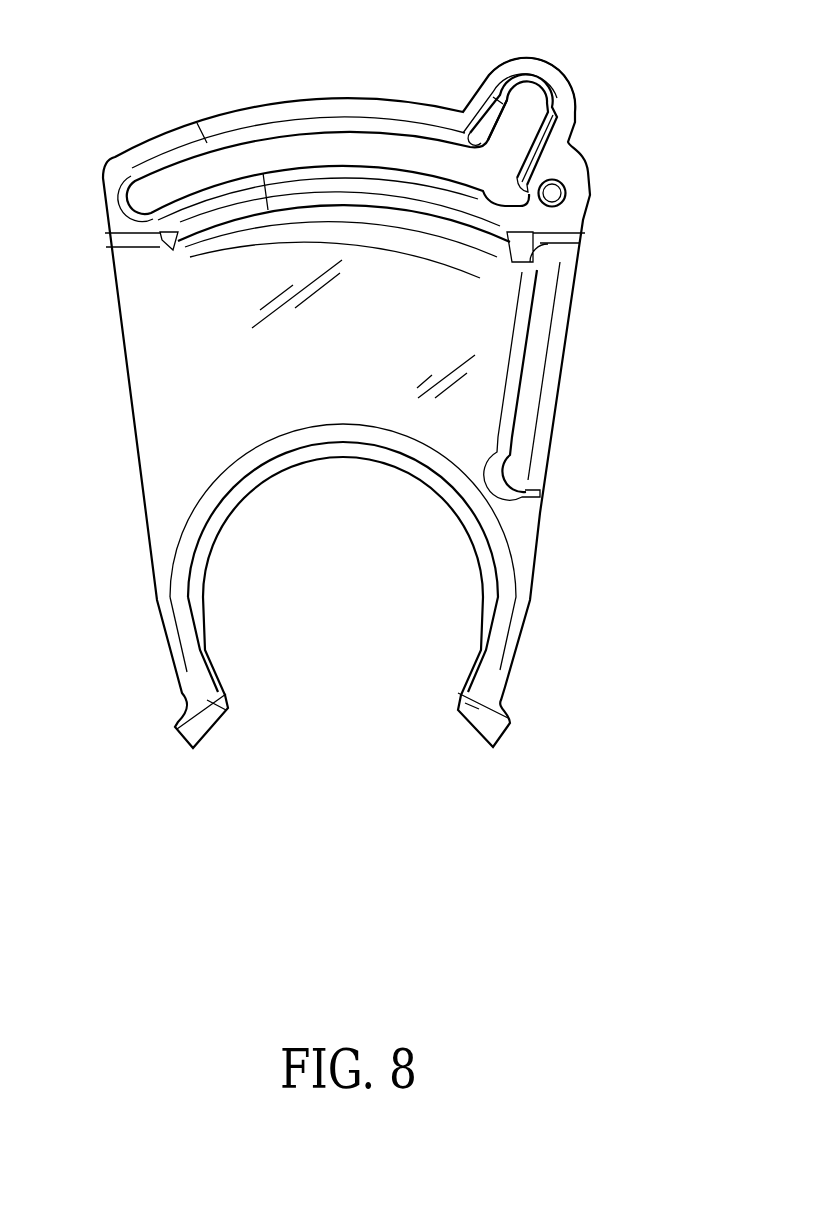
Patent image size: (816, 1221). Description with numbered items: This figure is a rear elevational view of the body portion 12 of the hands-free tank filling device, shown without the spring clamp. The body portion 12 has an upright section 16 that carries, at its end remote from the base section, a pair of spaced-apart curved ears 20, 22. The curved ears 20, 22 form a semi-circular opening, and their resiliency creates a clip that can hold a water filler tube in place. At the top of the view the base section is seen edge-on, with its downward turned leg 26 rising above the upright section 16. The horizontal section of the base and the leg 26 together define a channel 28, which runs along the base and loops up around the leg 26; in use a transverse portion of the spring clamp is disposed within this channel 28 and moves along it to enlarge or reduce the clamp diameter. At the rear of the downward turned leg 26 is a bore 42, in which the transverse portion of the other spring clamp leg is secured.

The body portion 12 is at (136, 452).
The upright section 16 is at (200, 382).
The curved ear 20 is at (480, 723).
The curved ear 22 is at (205, 722).
The downward turned leg 26 is at (548, 70).
The channel 28 is at (193, 175).
The bore 42 is at (552, 193).